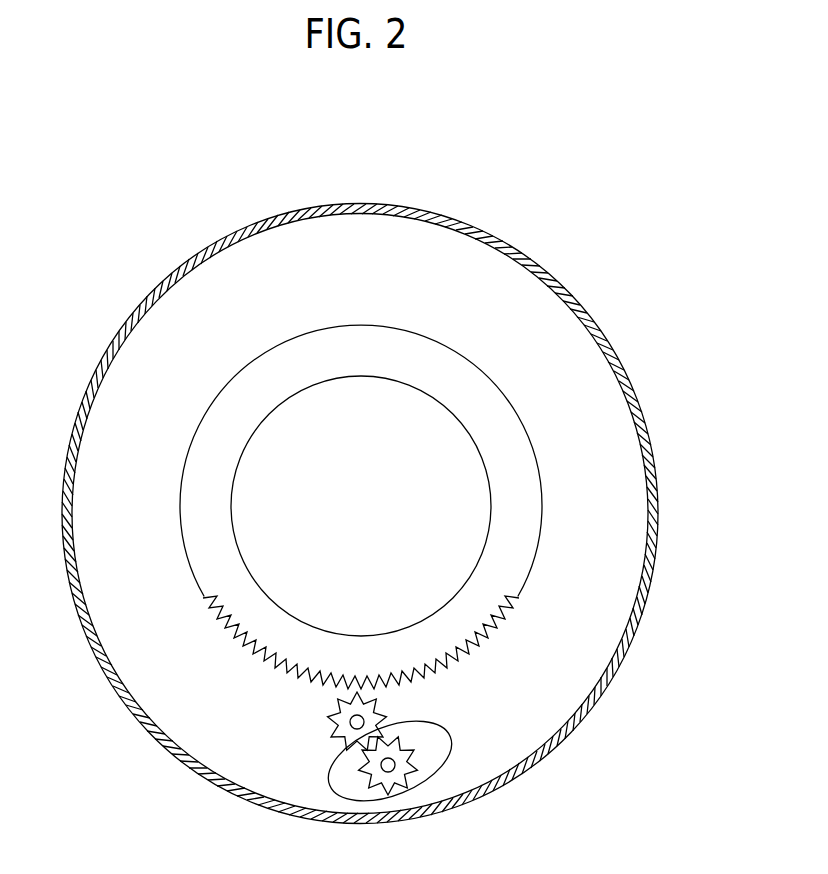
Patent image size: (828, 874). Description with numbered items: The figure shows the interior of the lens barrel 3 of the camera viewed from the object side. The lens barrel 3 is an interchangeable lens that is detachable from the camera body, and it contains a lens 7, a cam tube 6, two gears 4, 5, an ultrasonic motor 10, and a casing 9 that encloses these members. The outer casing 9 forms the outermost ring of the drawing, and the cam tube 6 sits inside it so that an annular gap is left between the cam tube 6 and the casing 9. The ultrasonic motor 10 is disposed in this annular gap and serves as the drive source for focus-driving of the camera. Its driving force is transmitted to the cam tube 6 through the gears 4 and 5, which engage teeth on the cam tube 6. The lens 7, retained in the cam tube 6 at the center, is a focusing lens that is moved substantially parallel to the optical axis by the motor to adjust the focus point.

The lens barrel 3 is at (243, 215).
The casing 9 is at (530, 260).
The cam tube 6 is at (483, 385).
The lens 7 is at (361, 506).
The gear 5 is at (330, 727).
The gear 4 is at (412, 754).
The ultrasonic motor 10 is at (449, 751).